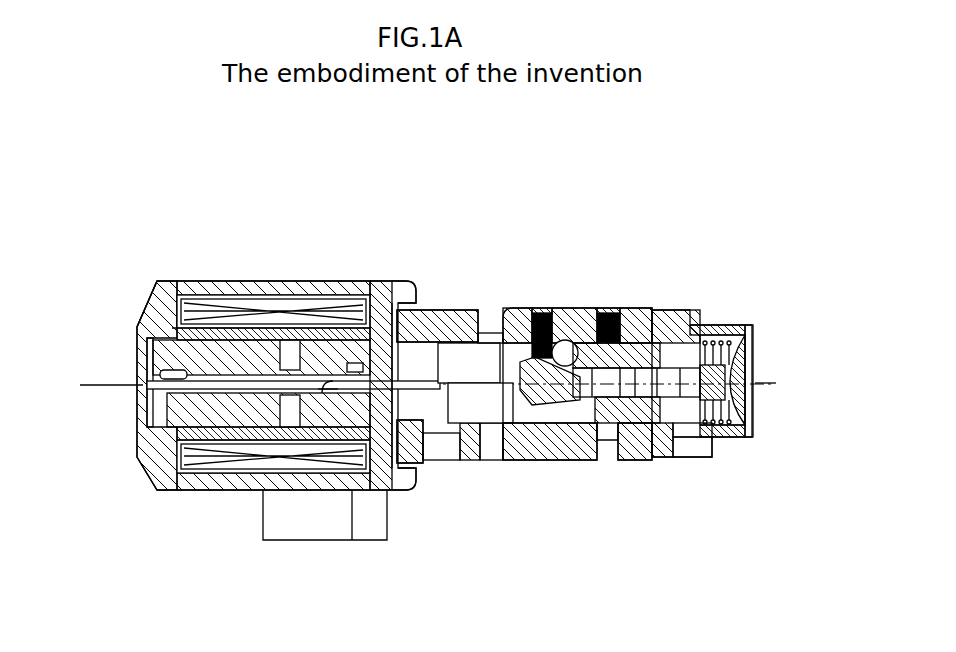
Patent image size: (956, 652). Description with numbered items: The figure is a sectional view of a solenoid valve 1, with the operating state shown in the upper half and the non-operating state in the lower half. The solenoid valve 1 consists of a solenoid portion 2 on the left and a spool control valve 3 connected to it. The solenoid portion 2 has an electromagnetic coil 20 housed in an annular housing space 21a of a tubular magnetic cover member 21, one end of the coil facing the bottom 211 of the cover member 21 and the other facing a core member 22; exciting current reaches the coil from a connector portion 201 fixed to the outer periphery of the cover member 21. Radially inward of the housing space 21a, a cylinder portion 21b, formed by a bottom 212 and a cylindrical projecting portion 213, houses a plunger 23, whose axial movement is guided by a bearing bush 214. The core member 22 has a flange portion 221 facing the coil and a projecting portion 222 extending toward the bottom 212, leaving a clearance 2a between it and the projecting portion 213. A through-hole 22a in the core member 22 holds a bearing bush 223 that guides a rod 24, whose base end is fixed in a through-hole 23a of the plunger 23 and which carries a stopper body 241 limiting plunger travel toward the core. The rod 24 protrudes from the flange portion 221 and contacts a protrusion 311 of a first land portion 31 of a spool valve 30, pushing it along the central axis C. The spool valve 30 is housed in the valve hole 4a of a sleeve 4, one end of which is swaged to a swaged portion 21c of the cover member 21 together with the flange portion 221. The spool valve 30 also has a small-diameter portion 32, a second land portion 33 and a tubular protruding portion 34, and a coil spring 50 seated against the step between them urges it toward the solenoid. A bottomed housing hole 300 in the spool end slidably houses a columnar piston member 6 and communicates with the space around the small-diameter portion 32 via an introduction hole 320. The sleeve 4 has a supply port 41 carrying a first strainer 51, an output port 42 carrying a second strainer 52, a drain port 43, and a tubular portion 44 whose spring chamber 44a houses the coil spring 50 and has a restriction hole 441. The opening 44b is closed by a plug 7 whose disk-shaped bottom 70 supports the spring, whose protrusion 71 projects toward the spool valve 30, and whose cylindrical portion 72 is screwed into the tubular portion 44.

The solenoid valve 1 is at (160, 220).
The solenoid portion 2 is at (336, 233).
The clearance 2a is at (262, 330).
The electromagnetic coil 20 is at (280, 300).
The cover member 21 is at (144, 253).
The housing space 21a is at (172, 303).
The cylinder portion 21b is at (152, 348).
The swaged portion 21c is at (422, 288).
The bottom of cover member 211 is at (153, 320).
The bottom of cylinder portion 212 is at (140, 394).
The projecting portion 213 is at (225, 332).
The bearing bush 214 is at (193, 473).
The core member 22 is at (400, 290).
The through-hole 22a is at (345, 395).
The flange portion 221 is at (387, 283).
The projecting portion 222 is at (322, 322).
The bearing bush 223 is at (328, 386).
The plunger 23 is at (178, 413).
The through-hole 23a is at (167, 372).
The rod 24 is at (170, 393).
The stopper body 241 is at (232, 458).
The connector portion 201 is at (313, 539).
The spool control valve 3 is at (433, 483).
The spool valve 30 is at (647, 312).
The housing hole 300 is at (603, 417).
The first land portion 31 is at (470, 405).
The protrusion 311 is at (433, 395).
The small-diameter portion 32 is at (520, 400).
The introduction hole 320 is at (576, 386).
The second land portion 33 is at (632, 425).
The tubular protruding portion 34 is at (704, 418).
The sleeve 4 is at (753, 282).
The valve hole 4a is at (664, 320).
The supply port 41 is at (607, 311).
The output port 42 is at (543, 311).
The drain port 43 is at (489, 318).
The tubular portion 44 is at (756, 436).
The spring chamber 44a is at (684, 320).
The opening 44b is at (758, 411).
The restriction hole 441 is at (679, 448).
The coil spring 50 is at (756, 353).
The first strainer 51 is at (613, 314).
The second strainer 52 is at (548, 314).
The piston member 6 is at (618, 416).
The plug 7 is at (758, 363).
The bottom of plug 70 is at (754, 406).
The protrusion 71 is at (728, 345).
The cylindrical portion 72 is at (722, 322).
The central axis C is at (773, 379).